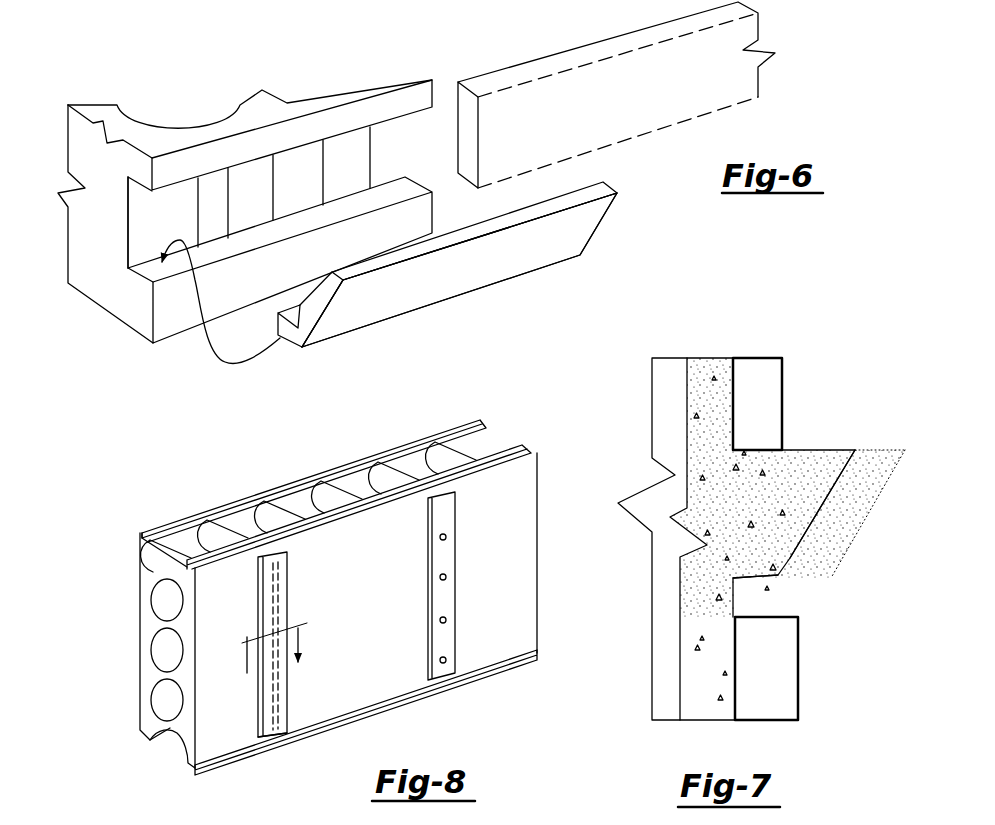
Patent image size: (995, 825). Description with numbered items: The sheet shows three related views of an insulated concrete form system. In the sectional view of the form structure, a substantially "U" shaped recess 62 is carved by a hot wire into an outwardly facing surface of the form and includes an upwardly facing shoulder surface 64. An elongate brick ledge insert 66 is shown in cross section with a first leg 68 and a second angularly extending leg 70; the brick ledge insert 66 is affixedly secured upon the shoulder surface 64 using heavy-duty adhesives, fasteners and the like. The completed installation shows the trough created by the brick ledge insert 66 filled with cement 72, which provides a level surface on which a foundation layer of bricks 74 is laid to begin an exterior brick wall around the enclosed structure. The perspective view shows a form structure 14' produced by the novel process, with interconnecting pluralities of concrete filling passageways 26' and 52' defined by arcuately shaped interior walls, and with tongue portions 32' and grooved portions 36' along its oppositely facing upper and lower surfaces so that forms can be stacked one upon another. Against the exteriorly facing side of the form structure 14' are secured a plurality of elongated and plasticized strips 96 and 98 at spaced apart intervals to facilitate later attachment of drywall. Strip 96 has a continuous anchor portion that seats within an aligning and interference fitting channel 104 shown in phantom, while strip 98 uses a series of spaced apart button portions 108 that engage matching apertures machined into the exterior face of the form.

In FIG. 6, the "U" shaped recess 62 is at (128, 254).
In FIG. 6, the upwardly facing shoulder surface 64 is at (155, 274).
In FIG. 7, the upwardly facing shoulder surface 64 is at (767, 610).
In FIG. 6, the brick ledge insert 66 is at (365, 336).
In FIG. 7, the brick ledge insert 66 is at (843, 570).
In FIG. 6, the first leg 68 is at (293, 342).
In FIG. 7, the first leg 68 is at (807, 590).
In FIG. 6, the second angularly extending leg 70 is at (323, 307).
In FIG. 7, the second angularly extending leg 70 is at (883, 457).
In FIG. 7, the cement 72 is at (818, 453).
In FIG. 6, the foundation layer of bricks 74 is at (508, 80).
In FIG. 7, the foundation layer of bricks 74 is at (763, 365).
In FIG. 8, the form structure 14' is at (310, 610).
In FIG. 8, the concrete filling passageways 26' is at (133, 650).
In FIG. 8, the tongue portions 32' is at (318, 715).
In FIG. 8, the grooved portions 36' is at (128, 531).
In FIG. 8, the concrete filling passageways 52' is at (336, 496).
In FIG. 8, the elongated plasticized strip 96 is at (297, 600).
In FIG. 8, the elongated plasticized strip 98 is at (463, 580).
In FIG. 8, the channel 104 is at (277, 732).
In FIG. 8, the button portions 108 is at (440, 579).